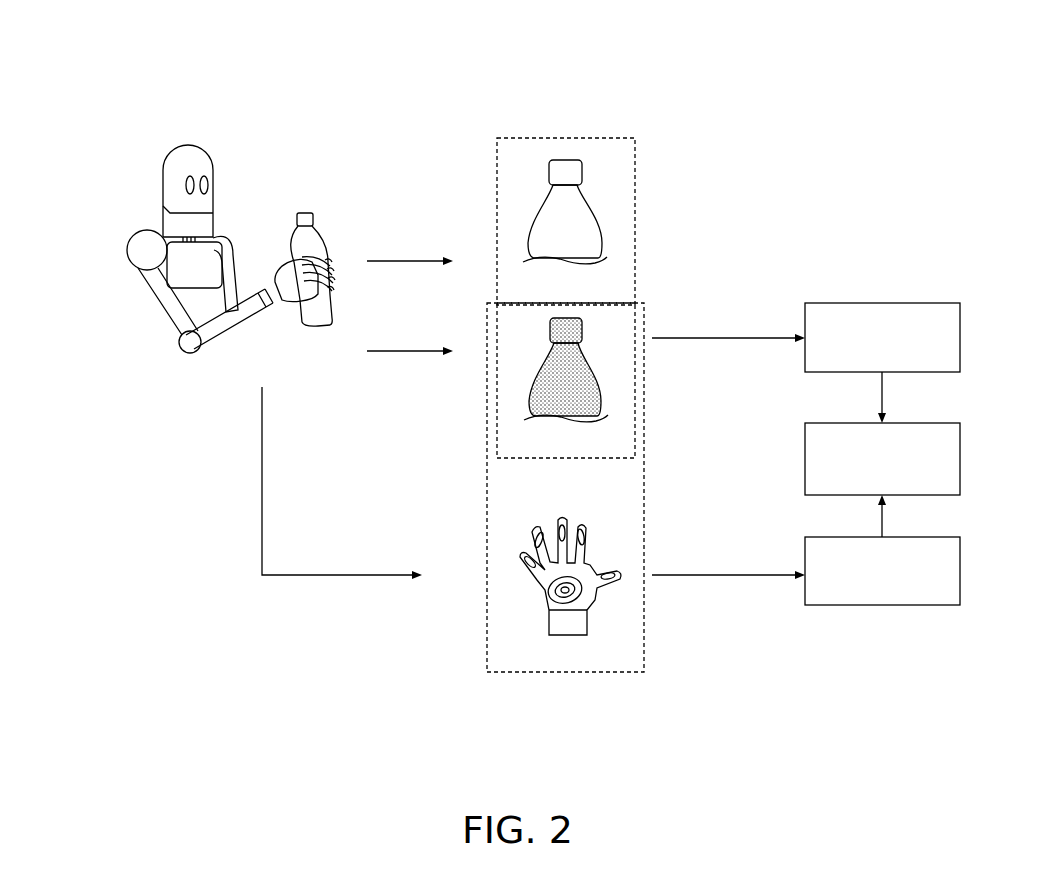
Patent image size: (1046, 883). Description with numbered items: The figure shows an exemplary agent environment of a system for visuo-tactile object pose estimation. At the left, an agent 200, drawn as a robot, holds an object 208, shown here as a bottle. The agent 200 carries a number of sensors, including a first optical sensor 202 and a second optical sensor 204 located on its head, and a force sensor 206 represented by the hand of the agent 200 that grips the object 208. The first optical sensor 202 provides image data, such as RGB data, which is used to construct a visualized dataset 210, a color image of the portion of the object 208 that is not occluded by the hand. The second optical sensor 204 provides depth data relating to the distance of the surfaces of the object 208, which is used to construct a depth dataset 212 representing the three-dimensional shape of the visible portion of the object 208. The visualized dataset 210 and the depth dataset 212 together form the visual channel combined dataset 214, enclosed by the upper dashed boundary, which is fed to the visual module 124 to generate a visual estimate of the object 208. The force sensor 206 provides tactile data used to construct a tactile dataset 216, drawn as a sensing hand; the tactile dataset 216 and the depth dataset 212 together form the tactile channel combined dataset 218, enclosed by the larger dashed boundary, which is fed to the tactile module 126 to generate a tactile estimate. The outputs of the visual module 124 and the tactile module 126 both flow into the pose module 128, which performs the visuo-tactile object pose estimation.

The agent 200 is at (113, 40).
The first optical sensor 202 is at (190, 176).
The second optical sensor 204 is at (206, 176).
The force sensor 206 is at (297, 240).
The object 208 is at (315, 215).
The visualized dataset 210 is at (543, 200).
The depth dataset 212 is at (547, 360).
The visual channel combined dataset 214 is at (642, 167).
The tactile dataset 216 is at (520, 553).
The tactile channel combined dataset 218 is at (655, 532).
The visual module 124 is at (882, 337).
The pose module 128 is at (882, 459).
The tactile module 126 is at (882, 571).